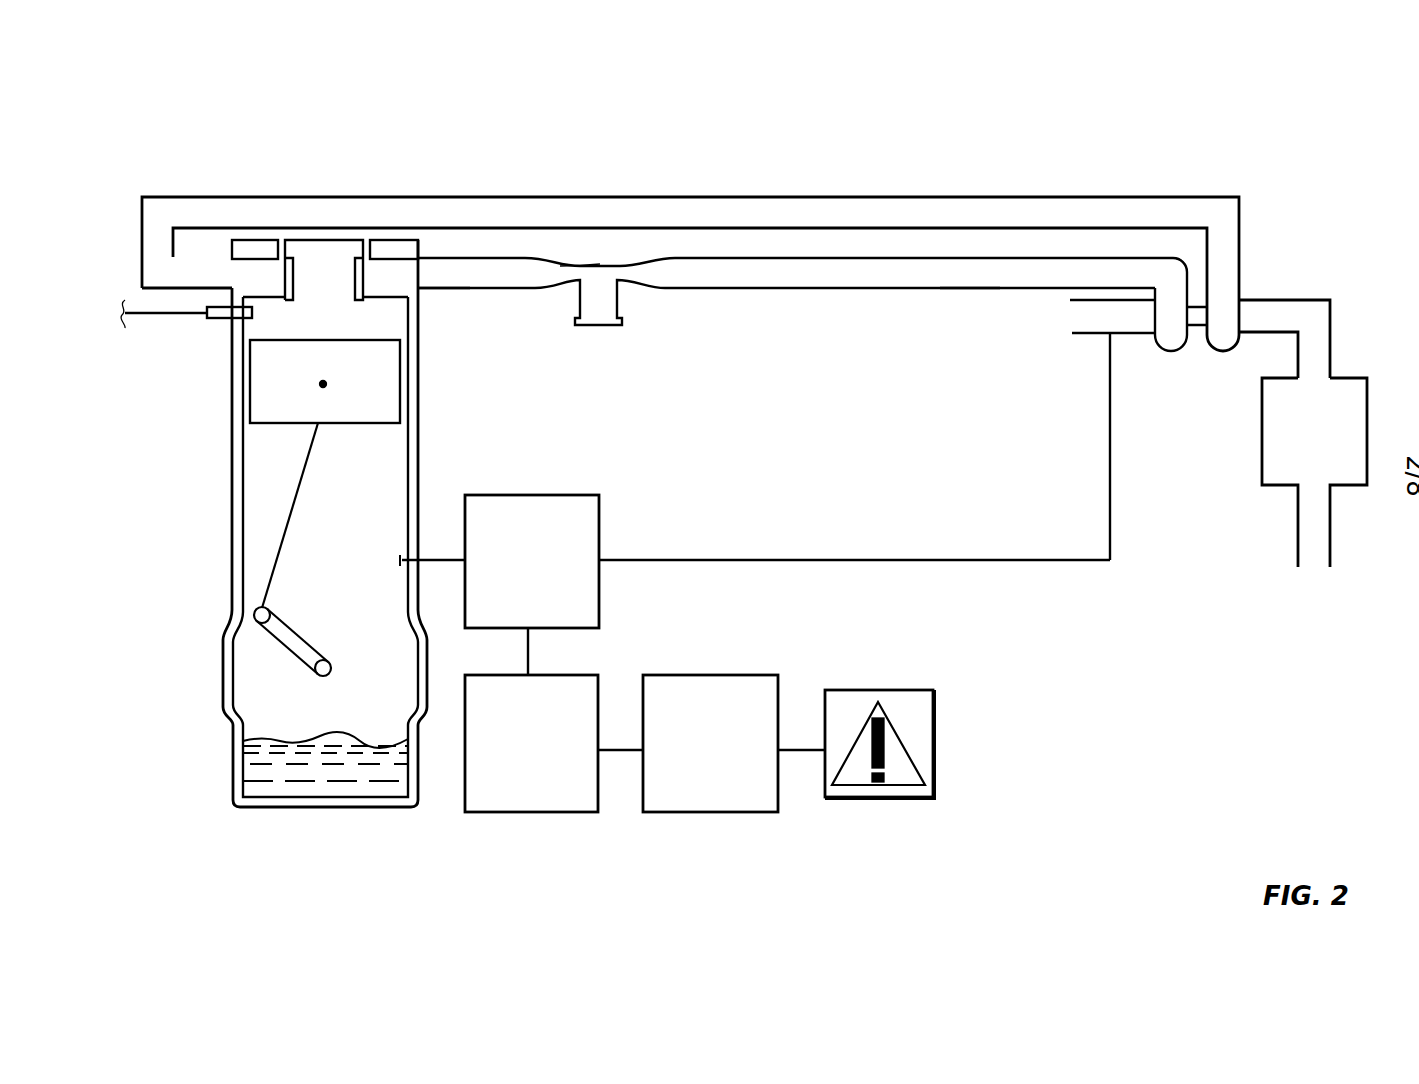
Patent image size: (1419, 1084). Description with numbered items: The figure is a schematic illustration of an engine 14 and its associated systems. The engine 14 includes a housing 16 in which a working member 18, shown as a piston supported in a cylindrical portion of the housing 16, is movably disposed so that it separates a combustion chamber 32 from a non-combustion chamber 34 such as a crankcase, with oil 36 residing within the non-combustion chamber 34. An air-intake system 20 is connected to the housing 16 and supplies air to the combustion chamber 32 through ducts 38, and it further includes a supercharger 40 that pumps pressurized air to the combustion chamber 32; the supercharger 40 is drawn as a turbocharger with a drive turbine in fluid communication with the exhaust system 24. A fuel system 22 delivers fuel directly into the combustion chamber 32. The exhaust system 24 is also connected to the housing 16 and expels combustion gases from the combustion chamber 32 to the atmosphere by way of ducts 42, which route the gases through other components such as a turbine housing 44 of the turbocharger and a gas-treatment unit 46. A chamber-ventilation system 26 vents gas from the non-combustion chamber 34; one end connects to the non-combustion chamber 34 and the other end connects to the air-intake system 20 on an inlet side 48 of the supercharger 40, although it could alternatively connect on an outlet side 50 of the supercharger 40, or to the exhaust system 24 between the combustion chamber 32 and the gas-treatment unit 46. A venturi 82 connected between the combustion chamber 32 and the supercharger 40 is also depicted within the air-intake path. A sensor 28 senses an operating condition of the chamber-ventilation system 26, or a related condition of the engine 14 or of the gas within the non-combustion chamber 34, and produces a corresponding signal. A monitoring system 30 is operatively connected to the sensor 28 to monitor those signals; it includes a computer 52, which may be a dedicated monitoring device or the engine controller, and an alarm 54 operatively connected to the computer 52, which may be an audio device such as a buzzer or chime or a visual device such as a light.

The engine 14 is at (584, 185).
The housing 16 is at (232, 533).
The working member 18 is at (325, 381).
The air-intake system 20 is at (842, 293).
The fuel system 22 is at (216, 320).
The exhaust system 24 is at (1040, 167).
The chamber-ventilation system 26 is at (755, 561).
The sensor 28 is at (531, 720).
The monitoring system 30 is at (779, 832).
The combustion chamber 32 is at (325, 285).
The non-combustion chamber 34 is at (297, 549).
The oil 36 is at (347, 785).
The ducts 38 is at (478, 292).
The supercharger 40 is at (1200, 338).
The ducts 42 is at (927, 197).
The turbine housing 44 is at (1235, 290).
The gas-treatment unit 46 is at (1314, 472).
The inlet side 48 is at (1083, 324).
The outlet side 50 is at (1062, 263).
The computer 52 is at (688, 743).
The alarm 54 is at (934, 731).
The venturi 82 is at (585, 265).